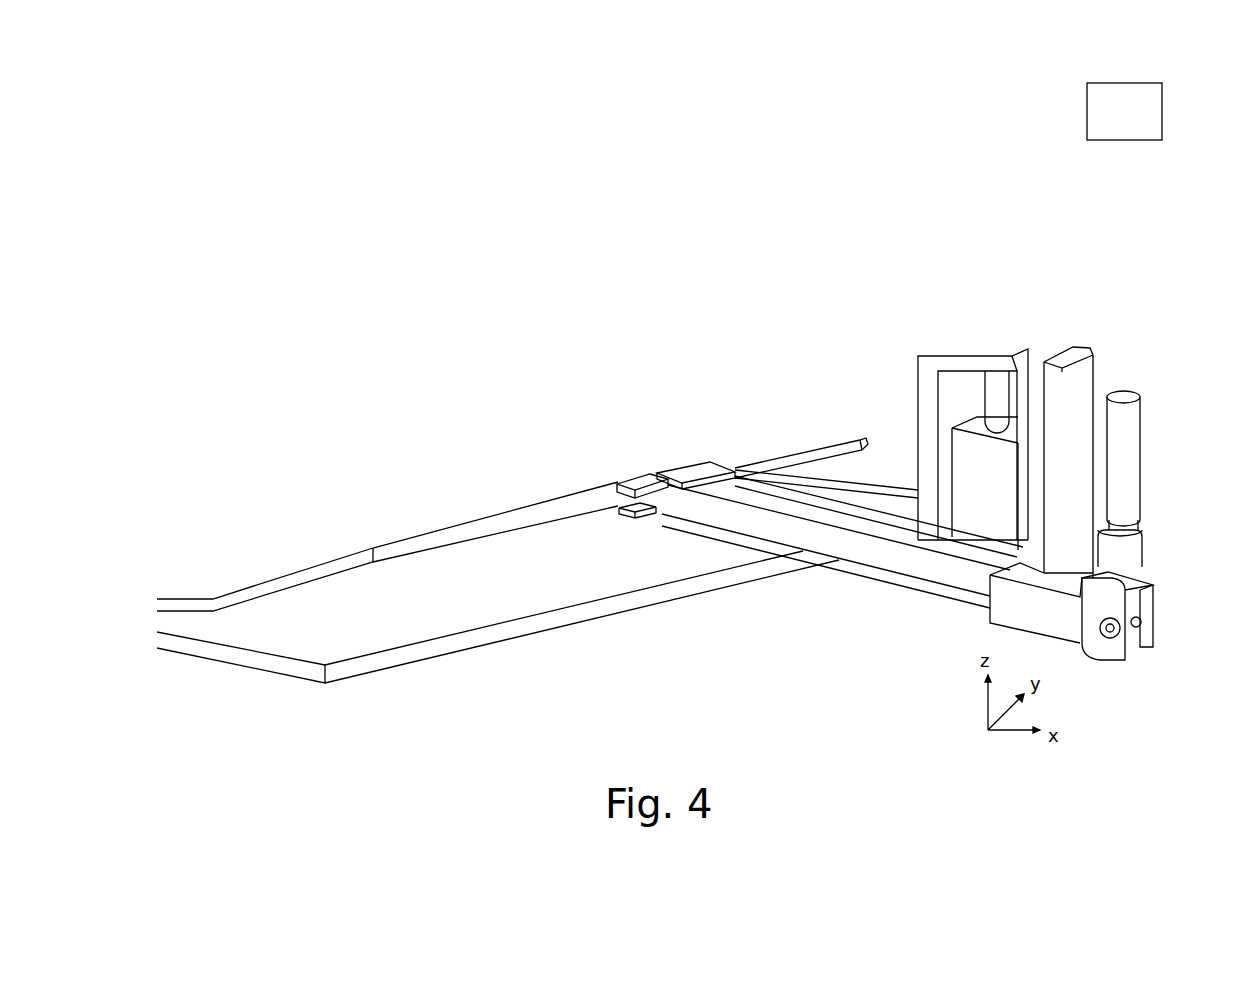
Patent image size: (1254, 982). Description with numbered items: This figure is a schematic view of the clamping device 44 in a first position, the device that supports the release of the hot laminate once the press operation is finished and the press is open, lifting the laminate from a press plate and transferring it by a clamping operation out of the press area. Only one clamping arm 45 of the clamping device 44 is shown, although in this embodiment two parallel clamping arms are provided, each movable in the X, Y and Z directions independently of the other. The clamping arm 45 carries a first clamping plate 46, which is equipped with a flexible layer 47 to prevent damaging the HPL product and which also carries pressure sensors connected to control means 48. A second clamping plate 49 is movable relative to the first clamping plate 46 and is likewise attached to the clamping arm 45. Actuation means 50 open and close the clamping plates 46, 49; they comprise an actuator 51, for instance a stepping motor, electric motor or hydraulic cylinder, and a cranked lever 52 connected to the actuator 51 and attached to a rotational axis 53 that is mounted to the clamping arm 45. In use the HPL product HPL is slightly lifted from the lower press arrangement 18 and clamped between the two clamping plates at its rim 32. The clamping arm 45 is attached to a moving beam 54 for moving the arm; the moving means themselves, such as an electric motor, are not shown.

The lower press arrangement 18 is at (345, 652).
The rim 32 is at (790, 445).
The clamping device 44 is at (580, 259).
The clamping arm 45 is at (832, 565).
The first clamping plate 46 is at (627, 508).
The flexible layer 47 is at (665, 495).
The control means 48 is at (1122, 390).
The second clamping plate 49 is at (712, 465).
The actuation means 50 is at (1000, 385).
The actuator 51 is at (1000, 499).
The cranked lever 52 is at (928, 378).
The rotational axis 53 is at (922, 565).
The moving beam 54 is at (1128, 468).
The HPL product HPL is at (230, 598).